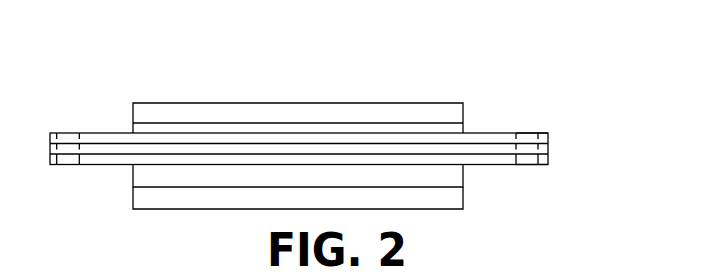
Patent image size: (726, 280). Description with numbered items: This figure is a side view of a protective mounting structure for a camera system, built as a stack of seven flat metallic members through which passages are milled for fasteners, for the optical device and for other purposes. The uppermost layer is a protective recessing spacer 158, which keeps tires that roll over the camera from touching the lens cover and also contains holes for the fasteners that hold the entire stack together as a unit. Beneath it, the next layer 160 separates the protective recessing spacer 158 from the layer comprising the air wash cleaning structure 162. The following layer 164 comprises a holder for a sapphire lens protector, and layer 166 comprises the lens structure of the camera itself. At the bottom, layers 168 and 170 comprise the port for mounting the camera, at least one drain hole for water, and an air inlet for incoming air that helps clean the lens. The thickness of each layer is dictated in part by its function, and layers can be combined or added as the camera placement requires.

The protective recessing spacer 158 is at (442, 112).
The separating layer 160 is at (463, 130).
The air wash cleaning structure 162 is at (547, 140).
The sapphire lens protector holder layer 164 is at (548, 148).
The lens structure layer 166 is at (548, 160).
The camera mounting port layer 168 is at (465, 177).
The camera mounting port layer 170 is at (450, 198).